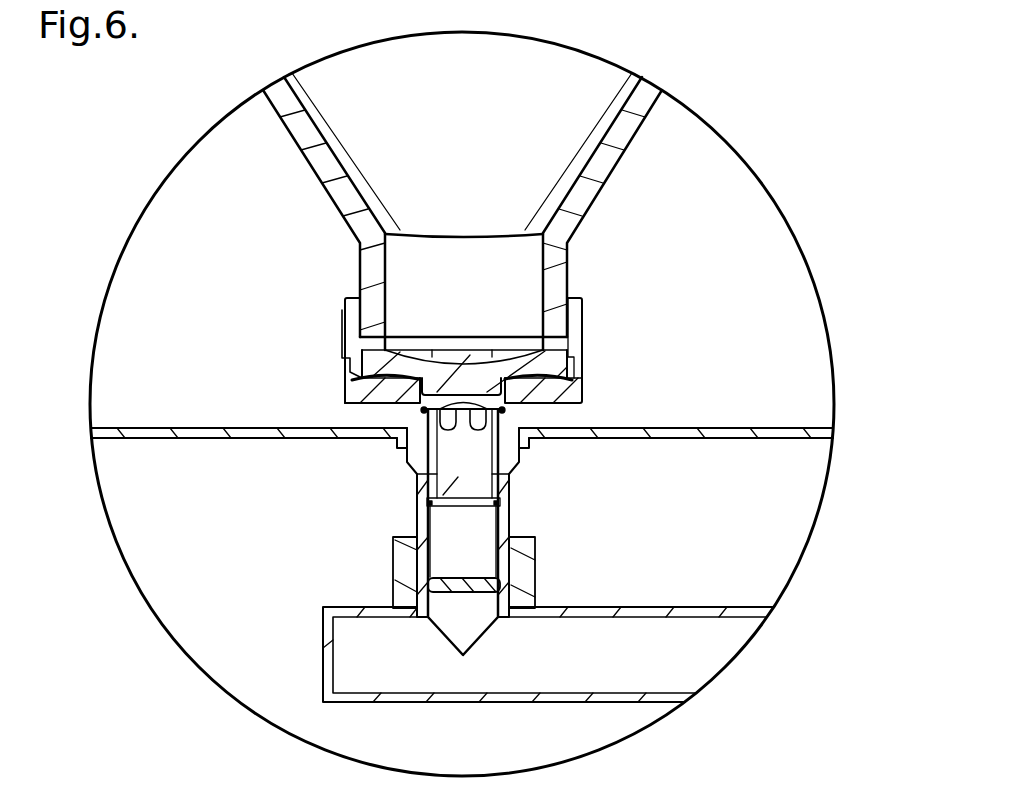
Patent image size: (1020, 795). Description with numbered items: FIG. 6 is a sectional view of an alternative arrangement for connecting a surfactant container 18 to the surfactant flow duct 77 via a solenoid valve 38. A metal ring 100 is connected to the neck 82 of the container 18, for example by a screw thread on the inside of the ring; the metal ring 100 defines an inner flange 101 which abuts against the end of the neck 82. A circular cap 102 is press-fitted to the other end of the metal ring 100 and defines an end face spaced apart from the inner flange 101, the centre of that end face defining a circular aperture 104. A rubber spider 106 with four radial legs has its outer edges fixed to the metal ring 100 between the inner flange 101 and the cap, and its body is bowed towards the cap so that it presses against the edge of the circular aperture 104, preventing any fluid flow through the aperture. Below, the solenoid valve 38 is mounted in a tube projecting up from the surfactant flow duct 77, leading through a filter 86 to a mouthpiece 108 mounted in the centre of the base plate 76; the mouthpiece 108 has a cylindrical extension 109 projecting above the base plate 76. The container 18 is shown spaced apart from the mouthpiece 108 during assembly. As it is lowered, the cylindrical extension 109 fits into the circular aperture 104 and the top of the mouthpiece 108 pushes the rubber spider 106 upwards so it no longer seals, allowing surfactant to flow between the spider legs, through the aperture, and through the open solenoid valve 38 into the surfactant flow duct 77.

The surfactant container 18 is at (476, 127).
The neck 82 is at (557, 275).
The metal ring 100 is at (570, 330).
The inner flange 101 is at (360, 342).
The circular cap 102 is at (570, 395).
The circular aperture 104 is at (425, 410).
The rubber spider 106 is at (362, 376).
The mouthpiece 108 is at (503, 452).
The cylindrical extension 109 is at (505, 410).
The base plate 76 is at (791, 428).
The surfactant flow duct 77 is at (623, 640).
The filter 86 is at (420, 500).
The solenoid valve 38 is at (460, 587).